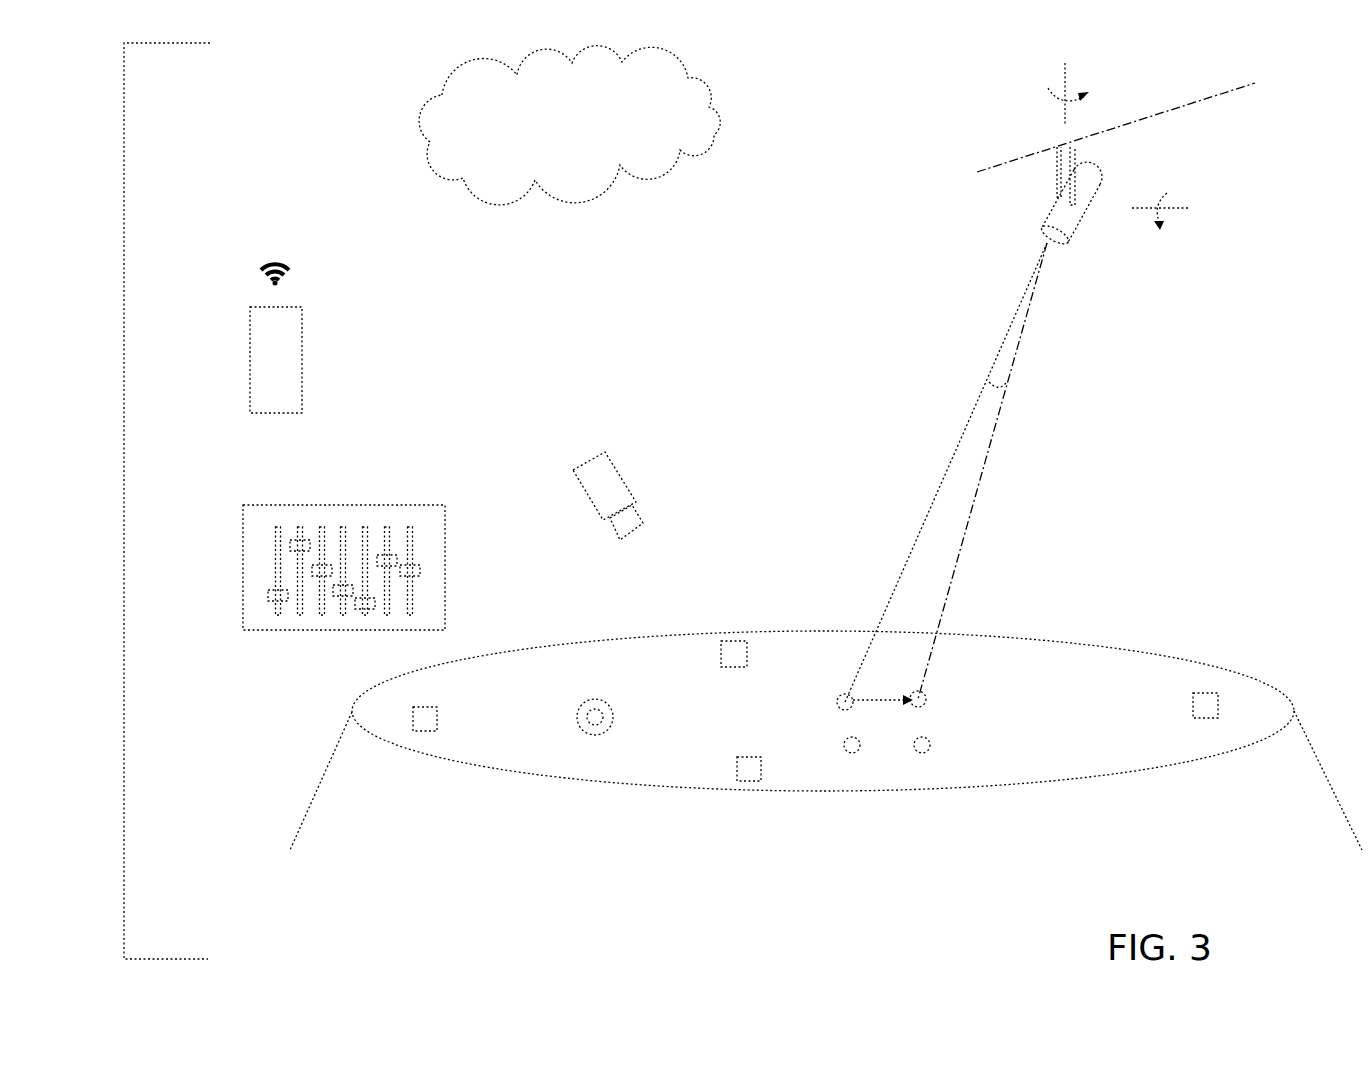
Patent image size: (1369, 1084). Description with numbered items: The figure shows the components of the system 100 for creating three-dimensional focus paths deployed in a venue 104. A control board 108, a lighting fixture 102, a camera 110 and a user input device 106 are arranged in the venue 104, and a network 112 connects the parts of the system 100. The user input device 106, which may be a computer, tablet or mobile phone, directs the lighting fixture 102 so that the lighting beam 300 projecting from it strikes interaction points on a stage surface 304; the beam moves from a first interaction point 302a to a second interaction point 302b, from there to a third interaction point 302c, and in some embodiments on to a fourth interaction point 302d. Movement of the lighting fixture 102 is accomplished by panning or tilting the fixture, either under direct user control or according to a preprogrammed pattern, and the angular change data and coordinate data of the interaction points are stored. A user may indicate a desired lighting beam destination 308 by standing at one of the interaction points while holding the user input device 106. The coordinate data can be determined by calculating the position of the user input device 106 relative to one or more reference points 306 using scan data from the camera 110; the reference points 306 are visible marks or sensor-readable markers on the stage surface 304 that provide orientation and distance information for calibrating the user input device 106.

The system 100 is at (86, 295).
The lighting fixture 102 is at (1072, 214).
The venue 104 is at (1117, 588).
The user input device 106 is at (262, 342).
The control board 108 is at (243, 566).
The camera 110 is at (625, 478).
The network 112 is at (712, 131).
The lighting beam 300 is at (972, 418).
The first interaction point 302a is at (838, 708).
The second interaction point 302b is at (927, 706).
The third interaction point 302c is at (930, 750).
The fourth interaction point 302d is at (860, 750).
The stage surface 304 is at (1081, 722).
The reference point 306 is at (413, 716).
The desired lighting beam destination 308 is at (600, 723).